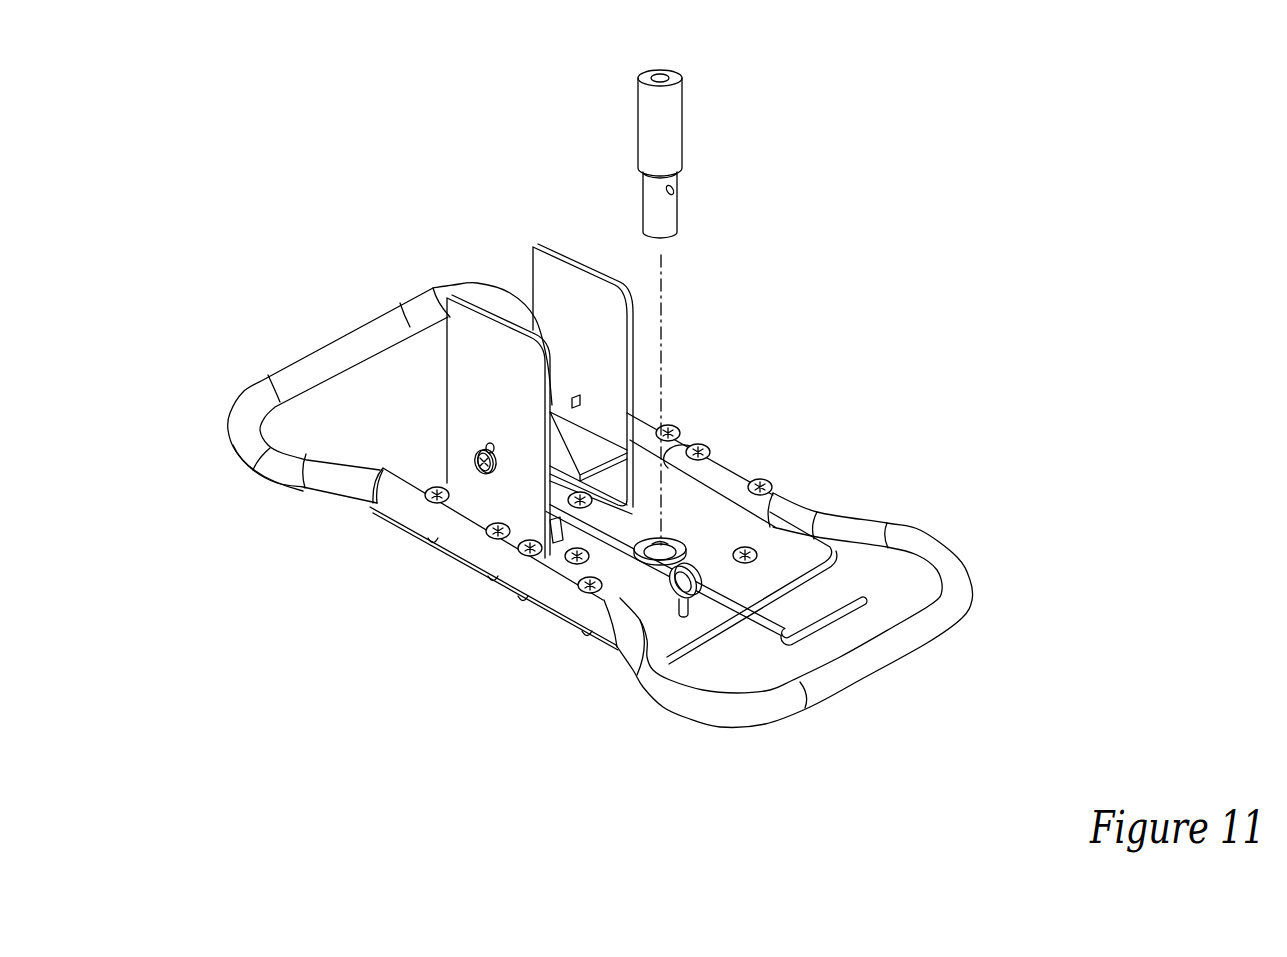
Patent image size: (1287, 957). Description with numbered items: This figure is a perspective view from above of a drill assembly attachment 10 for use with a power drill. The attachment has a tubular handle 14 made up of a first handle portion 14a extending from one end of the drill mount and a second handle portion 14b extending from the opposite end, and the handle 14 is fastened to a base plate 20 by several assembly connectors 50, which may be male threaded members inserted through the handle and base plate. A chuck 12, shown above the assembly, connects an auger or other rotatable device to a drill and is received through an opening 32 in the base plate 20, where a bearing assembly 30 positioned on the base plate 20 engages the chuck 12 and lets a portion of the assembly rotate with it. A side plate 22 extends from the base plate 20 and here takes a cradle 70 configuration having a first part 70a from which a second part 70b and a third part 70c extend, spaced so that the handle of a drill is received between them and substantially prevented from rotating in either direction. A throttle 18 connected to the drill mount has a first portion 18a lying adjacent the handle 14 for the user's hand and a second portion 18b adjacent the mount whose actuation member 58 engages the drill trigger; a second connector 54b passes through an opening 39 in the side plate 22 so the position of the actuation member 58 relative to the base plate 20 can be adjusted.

The drill assembly attachment 10 is at (256, 208).
The chuck 12 is at (675, 128).
The handle 14 is at (437, 292).
The first handle portion 14a is at (753, 705).
The second handle portion 14b is at (346, 340).
The throttle 18 is at (757, 630).
The first portion of the throttle 18a is at (833, 630).
The second portion of the throttle 18b is at (603, 413).
The base plate 20 is at (830, 557).
The side plate 22 is at (570, 257).
The bearing assembly 30 is at (680, 543).
The opening 32 is at (672, 540).
The opening in the side plate 39 is at (575, 402).
The assembly connectors 50 is at (768, 483).
The second connector 54b is at (480, 462).
The actuation member 58 is at (607, 450).
The cradle 70 is at (547, 217).
The first part of the cradle 70a is at (690, 447).
The second part of the cradle 70b is at (460, 385).
The third part of the cradle 70c is at (533, 252).